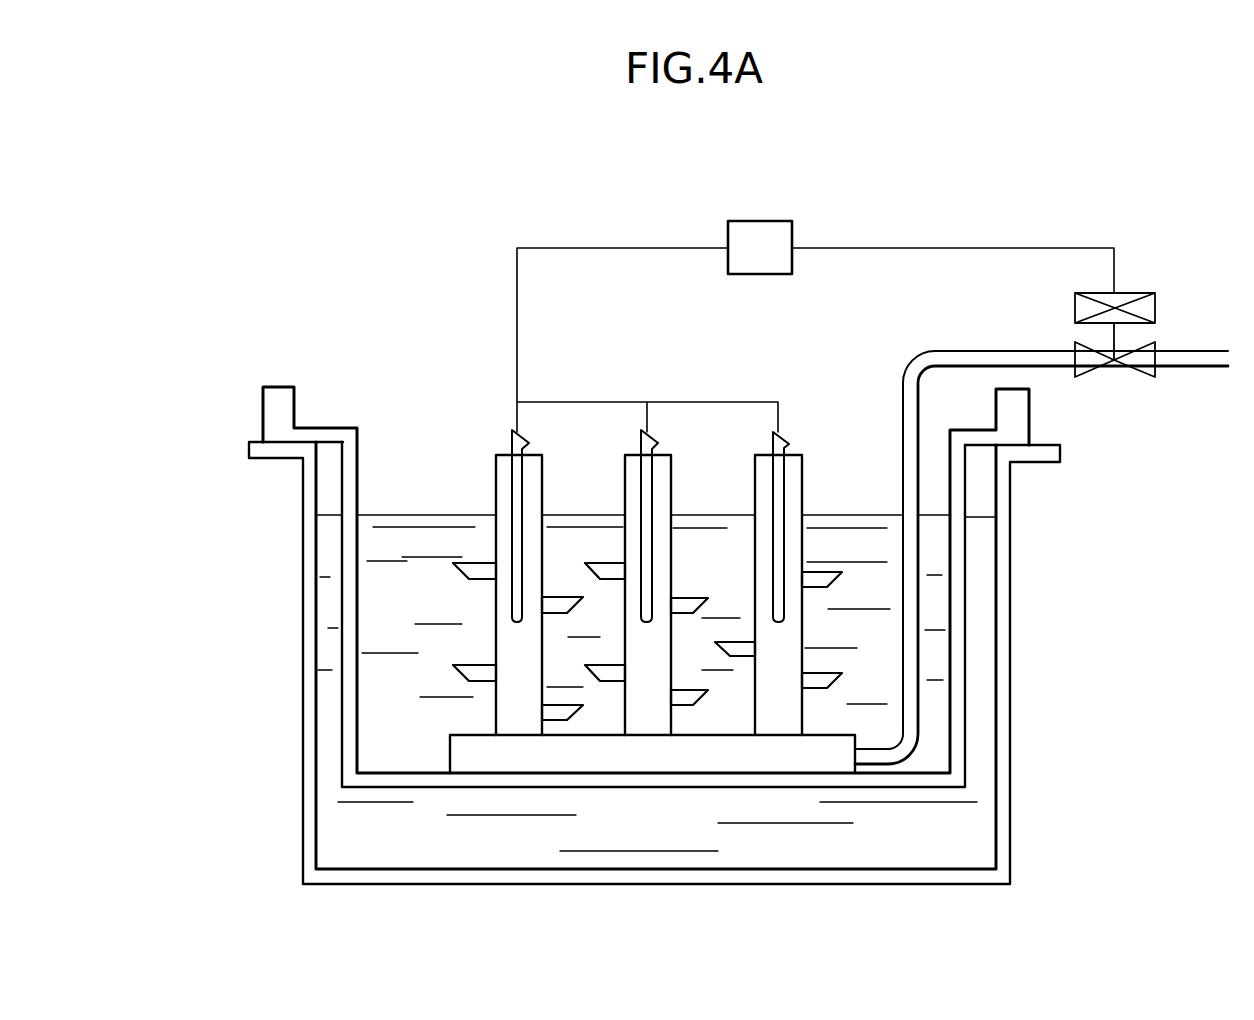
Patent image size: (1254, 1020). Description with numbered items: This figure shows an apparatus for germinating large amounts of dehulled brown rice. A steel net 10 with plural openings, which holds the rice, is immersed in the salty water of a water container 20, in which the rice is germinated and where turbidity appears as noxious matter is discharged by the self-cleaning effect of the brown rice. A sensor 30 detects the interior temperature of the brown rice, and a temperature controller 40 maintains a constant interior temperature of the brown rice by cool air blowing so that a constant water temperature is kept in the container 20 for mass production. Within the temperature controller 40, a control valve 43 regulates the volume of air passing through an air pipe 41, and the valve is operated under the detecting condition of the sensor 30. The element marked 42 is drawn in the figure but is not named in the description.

The steel net 10 is at (348, 560).
The water container 20 is at (307, 722).
The sensor 30 is at (512, 443).
The temperature controller 40 is at (620, 210).
The air pipe 41 is at (902, 387).
The valve 42 is at (1140, 370).
The control valve 43 is at (763, 233).